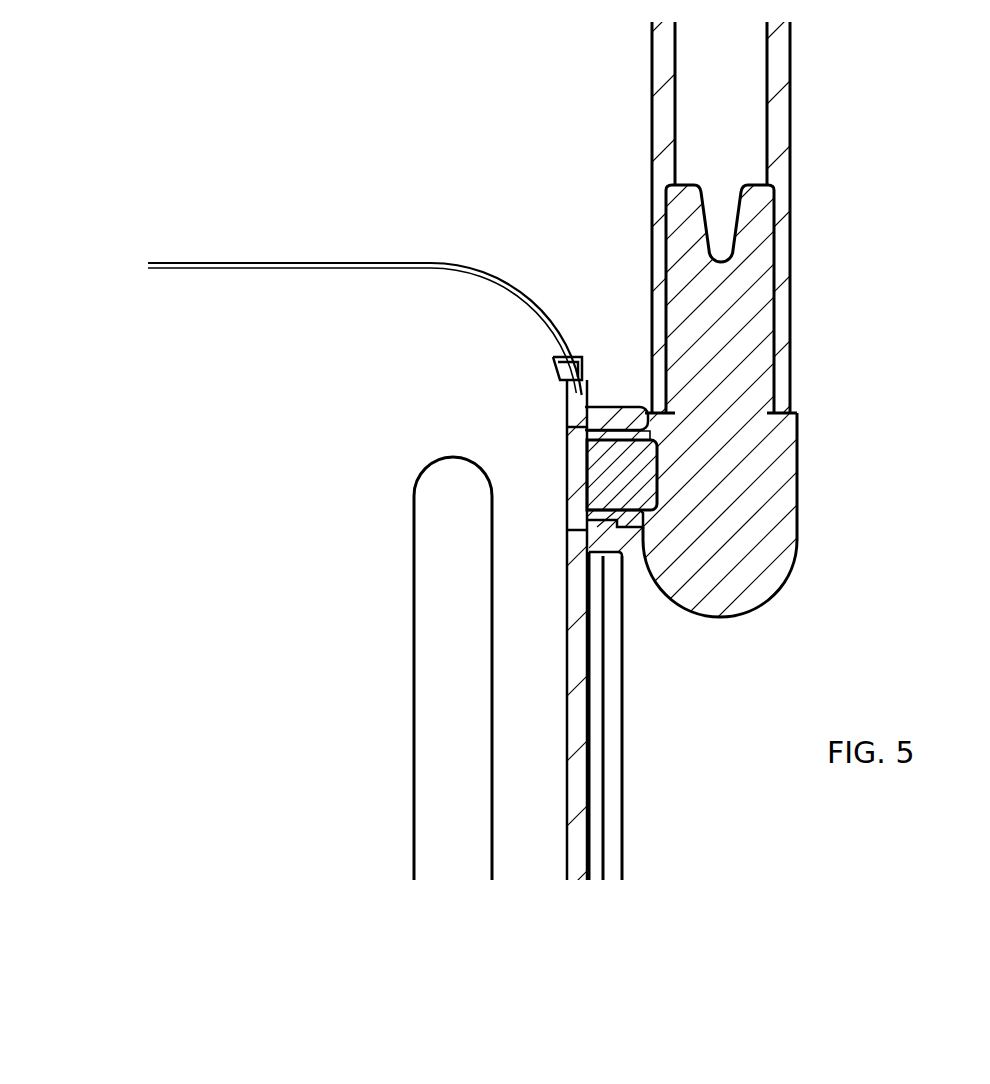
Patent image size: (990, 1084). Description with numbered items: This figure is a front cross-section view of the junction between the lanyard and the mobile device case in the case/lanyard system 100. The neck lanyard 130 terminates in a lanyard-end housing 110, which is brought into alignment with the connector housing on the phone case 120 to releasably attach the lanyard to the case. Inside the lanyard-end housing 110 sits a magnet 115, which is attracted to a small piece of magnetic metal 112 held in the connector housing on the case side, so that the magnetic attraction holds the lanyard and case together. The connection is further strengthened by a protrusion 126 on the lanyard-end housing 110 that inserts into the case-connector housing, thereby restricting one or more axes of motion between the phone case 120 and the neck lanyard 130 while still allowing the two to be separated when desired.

The case/lanyard system 100 is at (453, 236).
The lanyard-end housing 110 is at (755, 537).
The small piece of magnetic metal 112 is at (577, 460).
The magnet 115 is at (643, 455).
The phone case 120 is at (583, 683).
The protrusion 126 is at (637, 517).
The neck lanyard 130 is at (778, 122).